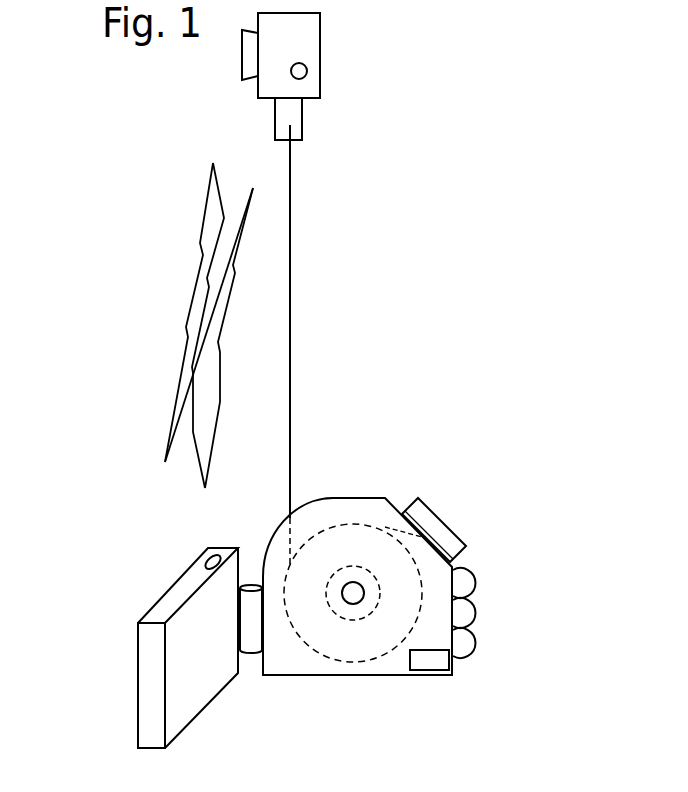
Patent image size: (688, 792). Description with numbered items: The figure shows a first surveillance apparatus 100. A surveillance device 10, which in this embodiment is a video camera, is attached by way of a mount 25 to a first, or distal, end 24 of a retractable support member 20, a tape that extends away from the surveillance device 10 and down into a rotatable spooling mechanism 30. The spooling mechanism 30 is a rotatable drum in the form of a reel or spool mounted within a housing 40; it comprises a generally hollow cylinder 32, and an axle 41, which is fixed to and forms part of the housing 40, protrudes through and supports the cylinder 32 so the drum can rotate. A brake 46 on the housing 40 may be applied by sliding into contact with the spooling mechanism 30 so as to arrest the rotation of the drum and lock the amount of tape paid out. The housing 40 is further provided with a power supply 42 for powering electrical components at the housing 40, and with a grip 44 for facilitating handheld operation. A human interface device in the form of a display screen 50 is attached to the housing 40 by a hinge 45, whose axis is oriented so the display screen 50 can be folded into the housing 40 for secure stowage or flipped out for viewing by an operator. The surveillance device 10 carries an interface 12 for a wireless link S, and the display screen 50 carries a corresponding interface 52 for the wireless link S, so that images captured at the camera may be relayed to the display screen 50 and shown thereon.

The surveillance apparatus 100 is at (516, 140).
The surveillance device 10 is at (320, 30).
The interface 12 is at (307, 69).
The mount 25 is at (302, 119).
The first end 24 is at (301, 148).
The retractable support member 20 is at (291, 295).
The wireless link S is at (197, 307).
The housing 40 is at (400, 676).
The rotatable spooling mechanism 30 is at (355, 674).
The hollow cylinder 32 is at (347, 566).
The axle 41 is at (364, 590).
The brake 46 is at (443, 510).
The grip 44 is at (463, 612).
The power supply 42 is at (433, 666).
The hinge 45 is at (250, 585).
The display screen 50 is at (197, 690).
The interface 52 is at (211, 558).